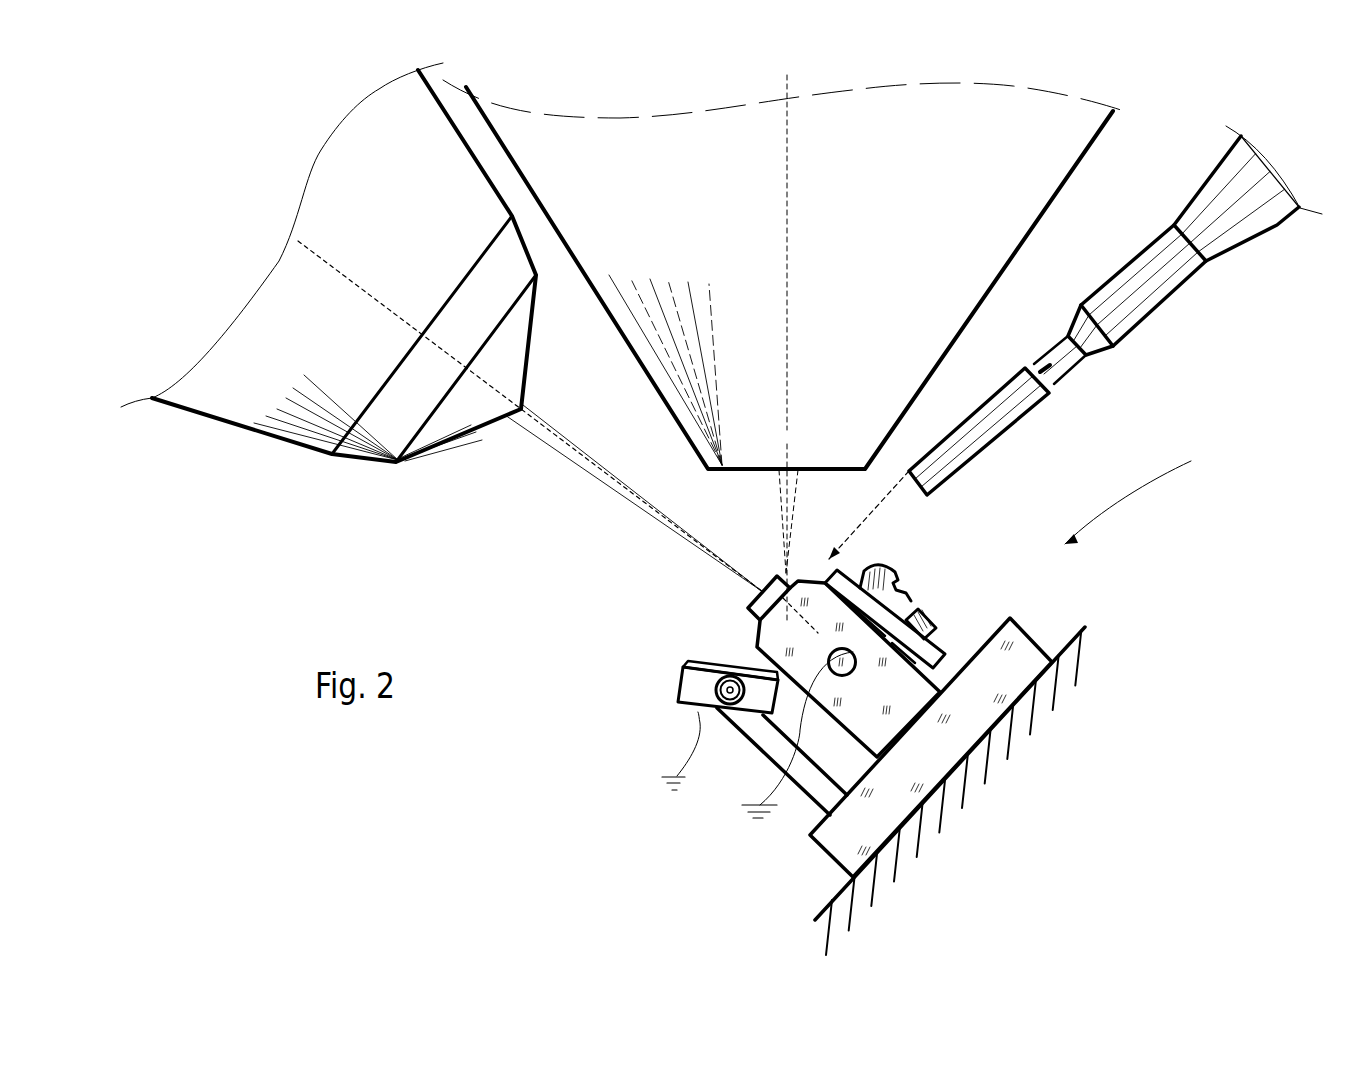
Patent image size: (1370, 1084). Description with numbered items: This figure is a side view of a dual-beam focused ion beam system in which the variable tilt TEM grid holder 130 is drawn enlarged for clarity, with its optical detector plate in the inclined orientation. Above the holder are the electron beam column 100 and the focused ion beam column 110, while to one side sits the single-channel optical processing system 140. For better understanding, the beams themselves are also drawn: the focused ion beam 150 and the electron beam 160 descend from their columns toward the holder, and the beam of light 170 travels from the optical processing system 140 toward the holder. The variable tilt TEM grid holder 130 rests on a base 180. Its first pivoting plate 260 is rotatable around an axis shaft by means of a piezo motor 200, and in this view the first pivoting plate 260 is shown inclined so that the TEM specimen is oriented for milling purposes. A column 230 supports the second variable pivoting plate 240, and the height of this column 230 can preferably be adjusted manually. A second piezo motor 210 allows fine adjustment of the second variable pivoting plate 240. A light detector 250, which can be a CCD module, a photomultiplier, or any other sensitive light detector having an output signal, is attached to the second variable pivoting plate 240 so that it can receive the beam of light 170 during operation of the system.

The electron beam column 100 is at (1056, 207).
The focused ion beam column 110 is at (196, 407).
The variable tilt TEM grid holder 130 is at (1150, 491).
The single-channel optical processing system 140 is at (1149, 325).
The focused ion beam 150 is at (780, 512).
The electron beam 160 is at (543, 437).
The beam of light 170 is at (862, 548).
The base 180 is at (1033, 637).
The piezo motor 200 is at (857, 655).
The second piezo motor 210 is at (727, 720).
The column 230 is at (790, 800).
The second variable pivoting plate 240 is at (717, 697).
The light detector 250 is at (685, 664).
The first pivoting plate 260 is at (748, 608).